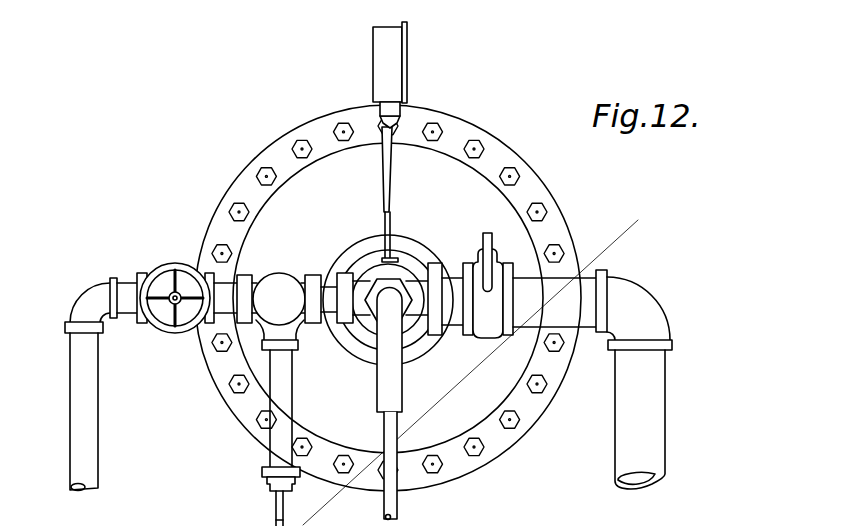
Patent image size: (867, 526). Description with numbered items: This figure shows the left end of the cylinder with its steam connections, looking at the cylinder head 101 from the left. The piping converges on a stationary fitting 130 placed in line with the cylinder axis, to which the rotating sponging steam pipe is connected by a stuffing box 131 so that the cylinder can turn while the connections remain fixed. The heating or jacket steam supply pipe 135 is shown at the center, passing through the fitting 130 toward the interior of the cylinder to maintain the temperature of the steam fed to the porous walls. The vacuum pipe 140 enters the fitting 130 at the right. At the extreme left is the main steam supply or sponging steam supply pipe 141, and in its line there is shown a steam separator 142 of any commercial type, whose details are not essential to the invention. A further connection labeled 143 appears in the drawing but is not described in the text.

The cylinder head 101 is at (503, 209).
The stationary fitting 130 is at (401, 272).
The stuffing box 131 is at (403, 68).
The heating or jacket steam supply pipe 135 is at (390, 437).
The vacuum pipe 140 is at (655, 451).
The main steam supply or sponging steam supply pipe 141 is at (88, 466).
The steam separator 142 is at (266, 352).
The drain pipe 143 is at (272, 492).